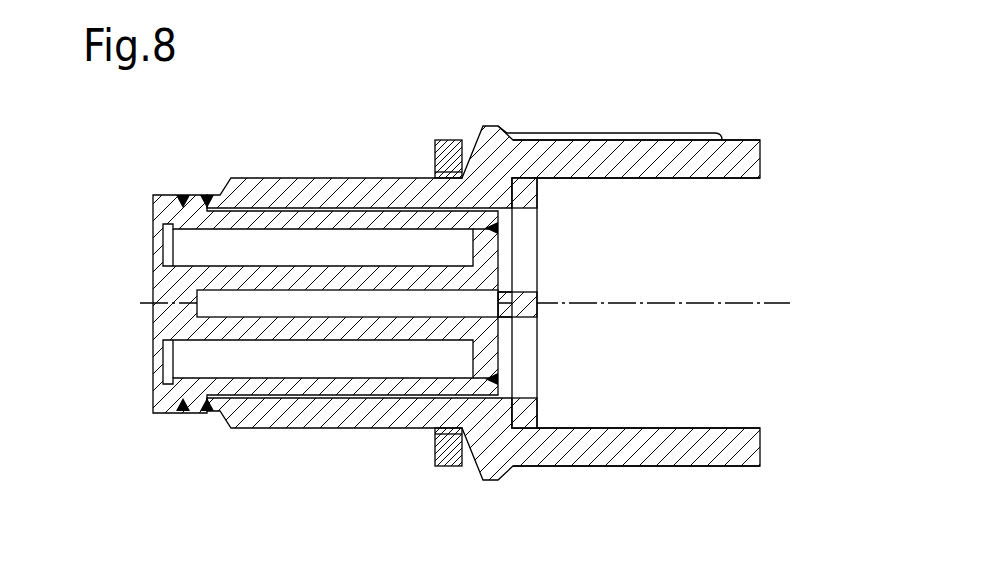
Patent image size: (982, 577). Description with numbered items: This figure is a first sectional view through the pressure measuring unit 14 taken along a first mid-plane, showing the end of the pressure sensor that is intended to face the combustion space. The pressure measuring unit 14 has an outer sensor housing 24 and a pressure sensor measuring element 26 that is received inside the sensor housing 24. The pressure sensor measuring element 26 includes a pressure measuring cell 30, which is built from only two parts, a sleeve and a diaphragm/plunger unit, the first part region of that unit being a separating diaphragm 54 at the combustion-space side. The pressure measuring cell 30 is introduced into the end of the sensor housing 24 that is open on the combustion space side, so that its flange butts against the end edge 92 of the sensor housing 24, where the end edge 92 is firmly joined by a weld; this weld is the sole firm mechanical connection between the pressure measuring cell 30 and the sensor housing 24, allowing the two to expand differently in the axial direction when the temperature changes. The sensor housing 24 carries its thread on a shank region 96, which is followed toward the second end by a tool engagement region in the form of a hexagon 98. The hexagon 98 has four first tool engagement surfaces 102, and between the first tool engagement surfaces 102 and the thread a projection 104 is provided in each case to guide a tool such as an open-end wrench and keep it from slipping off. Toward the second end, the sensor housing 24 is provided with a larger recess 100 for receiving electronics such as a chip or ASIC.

The pressure measuring unit 14 is at (745, 97).
The sensor housing 24 is at (552, 150).
The pressure sensor measuring element 26 is at (552, 311).
The pressure measuring cell 30 is at (370, 200).
The separating diaphragm 54 is at (146, 287).
The end edge 92 is at (330, 172).
The shank region 96 is at (366, 424).
The hexagon 98 is at (649, 128).
The recess 100 is at (727, 272).
The first tool engagement surfaces 102 is at (608, 135).
The projection 104 is at (490, 130).